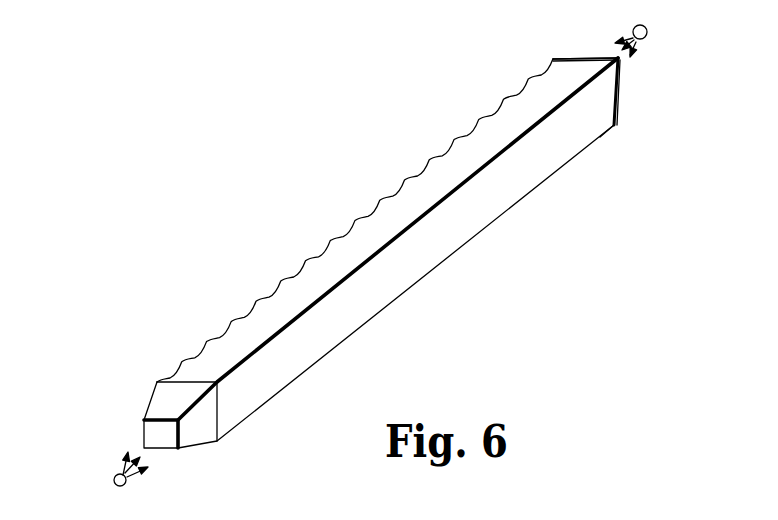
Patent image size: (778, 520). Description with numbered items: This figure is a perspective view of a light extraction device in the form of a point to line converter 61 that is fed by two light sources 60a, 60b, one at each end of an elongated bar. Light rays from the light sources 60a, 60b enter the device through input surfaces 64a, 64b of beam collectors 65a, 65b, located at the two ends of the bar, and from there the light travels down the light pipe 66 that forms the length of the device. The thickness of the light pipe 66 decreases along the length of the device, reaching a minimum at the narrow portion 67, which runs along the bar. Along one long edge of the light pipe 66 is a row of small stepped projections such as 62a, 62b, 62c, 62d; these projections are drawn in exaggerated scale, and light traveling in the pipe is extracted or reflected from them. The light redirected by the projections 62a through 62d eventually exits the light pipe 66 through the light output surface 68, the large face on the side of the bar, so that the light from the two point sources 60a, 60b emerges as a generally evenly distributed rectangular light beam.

The light source 60a is at (114, 480).
The light source 60b is at (668, 20).
The point to line converter 61 is at (408, 254).
The projection 62a is at (355, 235).
The projection 62b is at (380, 218).
The projection 62c is at (411, 191).
The projection 62d is at (436, 167).
The input surface 64a is at (164, 440).
The input surface 64b is at (588, 57).
The beam collector 65a is at (188, 424).
The beam collector 65b is at (617, 82).
The light pipe 66 is at (547, 95).
The narrow portion 67 is at (415, 220).
The light output surface 68 is at (457, 237).